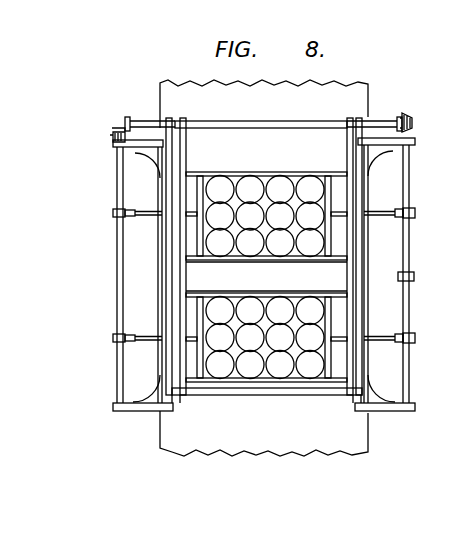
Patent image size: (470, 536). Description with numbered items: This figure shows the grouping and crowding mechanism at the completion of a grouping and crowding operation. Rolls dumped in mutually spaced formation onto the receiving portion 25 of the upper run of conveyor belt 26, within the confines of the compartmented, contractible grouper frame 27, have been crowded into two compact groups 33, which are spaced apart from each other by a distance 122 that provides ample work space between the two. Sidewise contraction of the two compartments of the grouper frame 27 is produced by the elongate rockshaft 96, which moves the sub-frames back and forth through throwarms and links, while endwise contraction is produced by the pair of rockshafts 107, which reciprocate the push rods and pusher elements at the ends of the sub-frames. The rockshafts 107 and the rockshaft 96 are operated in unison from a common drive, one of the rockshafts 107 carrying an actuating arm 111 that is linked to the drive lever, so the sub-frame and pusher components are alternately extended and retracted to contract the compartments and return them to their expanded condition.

The conveyor belt 26 is at (353, 103).
The rockshaft 96 is at (237, 125).
The receiving portion 25 is at (286, 155).
The distance 122 is at (266, 276).
The compact groups of rolls 33 is at (247, 186).
The grouper frame 27 is at (144, 428).
The rockshafts 107 is at (408, 200).
The actuating arm 111 is at (414, 277).